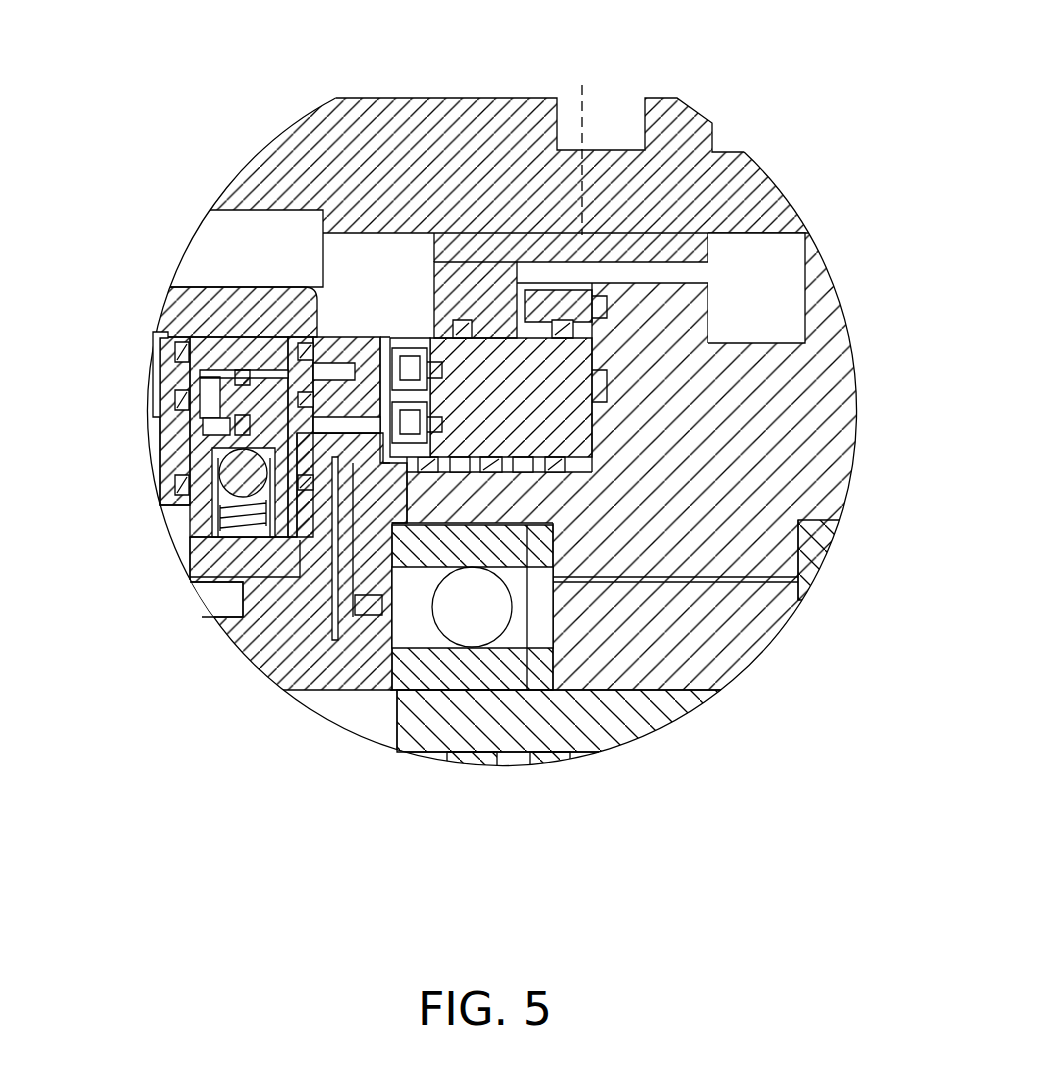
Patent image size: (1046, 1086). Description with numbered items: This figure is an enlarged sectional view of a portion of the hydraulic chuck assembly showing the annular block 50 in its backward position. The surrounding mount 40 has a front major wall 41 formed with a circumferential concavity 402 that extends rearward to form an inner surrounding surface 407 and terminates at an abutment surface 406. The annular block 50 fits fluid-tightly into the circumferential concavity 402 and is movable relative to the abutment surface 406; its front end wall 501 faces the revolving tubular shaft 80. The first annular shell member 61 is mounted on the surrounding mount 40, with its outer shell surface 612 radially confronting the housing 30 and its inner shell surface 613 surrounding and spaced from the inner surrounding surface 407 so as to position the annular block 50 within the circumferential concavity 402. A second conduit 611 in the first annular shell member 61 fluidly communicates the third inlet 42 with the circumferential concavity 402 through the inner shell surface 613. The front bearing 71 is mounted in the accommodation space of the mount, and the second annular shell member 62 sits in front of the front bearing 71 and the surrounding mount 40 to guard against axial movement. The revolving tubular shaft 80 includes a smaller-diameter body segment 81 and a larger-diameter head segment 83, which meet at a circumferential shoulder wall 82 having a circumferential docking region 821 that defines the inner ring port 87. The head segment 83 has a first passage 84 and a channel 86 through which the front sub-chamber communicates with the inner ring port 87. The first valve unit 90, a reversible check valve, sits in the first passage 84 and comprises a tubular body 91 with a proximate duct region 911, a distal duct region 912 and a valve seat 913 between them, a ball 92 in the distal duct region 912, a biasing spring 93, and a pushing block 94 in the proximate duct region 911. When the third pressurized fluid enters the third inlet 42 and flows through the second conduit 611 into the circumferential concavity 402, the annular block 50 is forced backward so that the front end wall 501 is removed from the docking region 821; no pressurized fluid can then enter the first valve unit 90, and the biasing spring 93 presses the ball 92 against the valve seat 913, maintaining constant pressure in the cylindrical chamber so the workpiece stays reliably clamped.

The housing 30 is at (753, 165).
The surrounding mount 40 is at (838, 394).
The front major wall 41 is at (523, 505).
The third inlet 42 is at (788, 250).
The circumferential concavity 402 is at (584, 142).
The abutment surface 406 is at (655, 290).
The inner surrounding surface 407 is at (583, 470).
The annular block 50 is at (407, 336).
The front end wall 501 is at (392, 355).
The first annular shell member 61 is at (512, 245).
The second conduit 611 is at (552, 372).
The outer shell surface 612 is at (452, 245).
The inner shell surface 613 is at (470, 322).
The second annular shell member 62 is at (355, 580).
The front bearing 71 is at (453, 690).
The revolving tubular shaft 80 is at (321, 720).
The smaller-diameter body segment 81 is at (630, 732).
The circumferential shoulder wall 82 is at (287, 668).
The circumferential docking region 821 is at (323, 345).
The larger-diameter head segment 83 is at (160, 445).
The first passage 84 is at (168, 440).
The channel 86 is at (200, 545).
The inner ring port 87 is at (341, 420).
The first valve unit 90 is at (251, 337).
The tubular body 91 is at (182, 410).
The proximate duct region 911 is at (187, 352).
The distal duct region 912 is at (240, 625).
The valve seat 913 is at (205, 448).
The ball 92 is at (225, 474).
The biasing spring 93 is at (213, 506).
The pushing block 94 is at (200, 365).